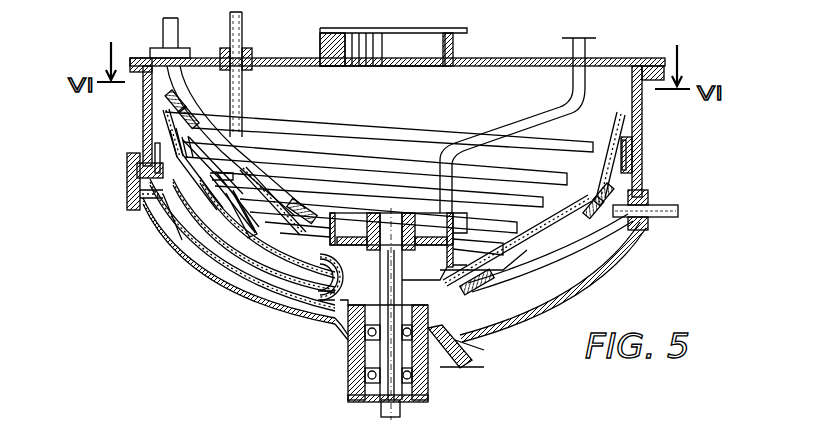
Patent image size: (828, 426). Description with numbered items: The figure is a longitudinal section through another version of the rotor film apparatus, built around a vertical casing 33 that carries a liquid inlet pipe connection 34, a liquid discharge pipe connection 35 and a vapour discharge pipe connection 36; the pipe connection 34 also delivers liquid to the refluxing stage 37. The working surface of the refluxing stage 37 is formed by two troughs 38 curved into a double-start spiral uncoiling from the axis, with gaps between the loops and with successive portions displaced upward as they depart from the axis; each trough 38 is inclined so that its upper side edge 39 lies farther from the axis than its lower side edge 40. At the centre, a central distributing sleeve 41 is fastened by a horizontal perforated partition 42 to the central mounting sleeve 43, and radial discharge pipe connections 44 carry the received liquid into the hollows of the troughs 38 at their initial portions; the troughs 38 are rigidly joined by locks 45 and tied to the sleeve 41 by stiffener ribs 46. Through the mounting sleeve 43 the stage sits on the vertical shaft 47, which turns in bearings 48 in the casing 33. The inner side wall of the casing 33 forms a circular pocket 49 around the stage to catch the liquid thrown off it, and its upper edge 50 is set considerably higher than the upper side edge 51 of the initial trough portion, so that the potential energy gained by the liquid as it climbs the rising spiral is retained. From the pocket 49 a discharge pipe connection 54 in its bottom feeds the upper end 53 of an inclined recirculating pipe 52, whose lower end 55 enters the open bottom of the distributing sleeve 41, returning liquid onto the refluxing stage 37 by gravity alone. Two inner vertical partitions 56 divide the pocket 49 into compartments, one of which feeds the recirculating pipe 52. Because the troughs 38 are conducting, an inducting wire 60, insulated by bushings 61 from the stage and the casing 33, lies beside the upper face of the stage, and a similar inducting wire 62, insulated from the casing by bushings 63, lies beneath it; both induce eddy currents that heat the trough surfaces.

The vertical casing 33 is at (660, 60).
The liquid inlet pipe connection 34 is at (588, 48).
The liquid discharge pipe connection 35 is at (484, 355).
The vapour discharge pipe connection 36 is at (455, 35).
The refluxing stage 37 is at (289, 116).
The troughs 38 is at (186, 262).
The upper side edge 39 is at (166, 250).
The lower side edge 40 is at (270, 308).
The central distributing sleeve 41 is at (423, 208).
The horizontal perforated partition 42 is at (355, 212).
The central mounting sleeve 43 is at (386, 212).
The radial discharge pipe connections 44 is at (452, 275).
The locks 45 is at (552, 252).
The stiffener ribs 46 is at (300, 325).
The vertical shaft 47 is at (402, 408).
The bearings 48 is at (352, 384).
The circular pocket 49 is at (640, 162).
The upper edge of the pocket 50 is at (643, 131).
The upper side edge of the initial portion of the trough 51 is at (522, 252).
The inclined recirculating pipe 52 is at (209, 290).
The upper end of the recirculating pipe 53 is at (152, 226).
The discharge pipe connection 54 is at (135, 173).
The lower end of the recirculating pipe 55 is at (348, 330).
The inner vertical partitions 56 is at (145, 136).
The inducting wire 60 is at (181, 101).
The bushings 61 is at (246, 50).
The inducting wire 62 is at (490, 290).
The bushings 63 is at (648, 231).